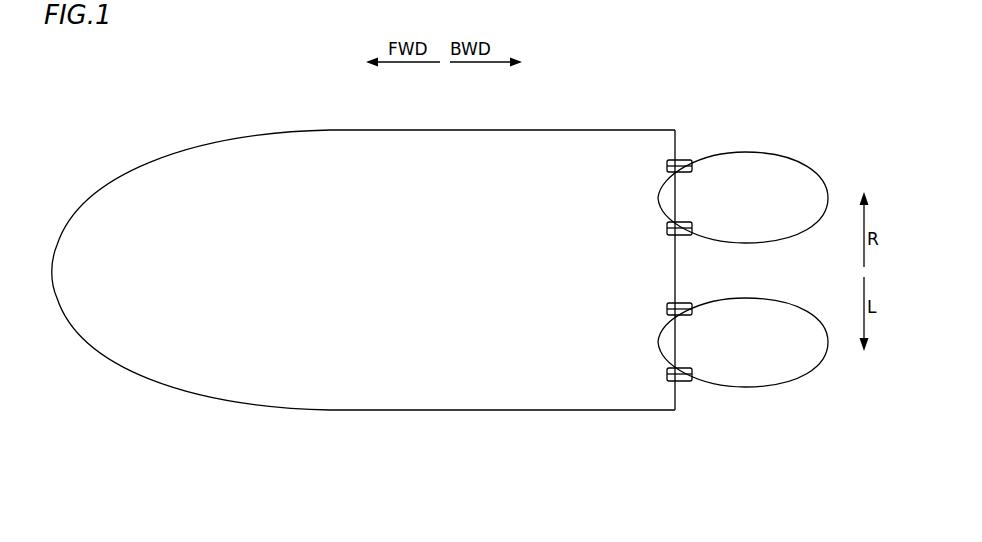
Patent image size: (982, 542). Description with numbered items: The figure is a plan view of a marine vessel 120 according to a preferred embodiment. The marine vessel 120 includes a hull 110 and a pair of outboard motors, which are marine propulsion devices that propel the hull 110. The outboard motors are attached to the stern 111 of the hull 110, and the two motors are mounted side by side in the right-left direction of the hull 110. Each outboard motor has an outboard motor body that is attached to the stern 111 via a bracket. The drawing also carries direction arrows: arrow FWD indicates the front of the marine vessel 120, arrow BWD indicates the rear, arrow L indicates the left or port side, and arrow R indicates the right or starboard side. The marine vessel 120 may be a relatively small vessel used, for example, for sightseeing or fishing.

The hull 110 is at (203, 123).
The stern 111 is at (667, 134).
The marine vessel 120 is at (130, 103).